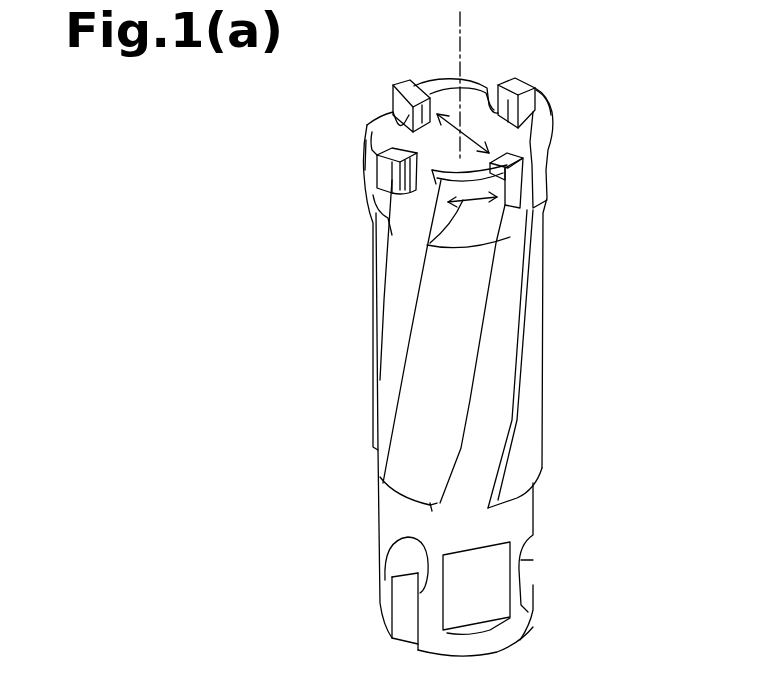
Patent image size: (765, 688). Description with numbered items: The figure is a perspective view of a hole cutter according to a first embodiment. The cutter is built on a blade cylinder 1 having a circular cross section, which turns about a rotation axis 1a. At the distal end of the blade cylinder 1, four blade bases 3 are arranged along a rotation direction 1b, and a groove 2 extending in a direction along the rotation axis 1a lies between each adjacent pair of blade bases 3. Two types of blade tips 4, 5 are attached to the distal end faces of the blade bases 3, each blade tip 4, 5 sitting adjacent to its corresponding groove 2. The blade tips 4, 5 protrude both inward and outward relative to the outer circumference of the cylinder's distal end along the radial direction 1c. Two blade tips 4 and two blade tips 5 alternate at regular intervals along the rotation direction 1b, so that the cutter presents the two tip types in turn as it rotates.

The blade cylinder 1 is at (548, 373).
The rotation axis 1a is at (462, 36).
The rotation direction 1b is at (443, 250).
The radial direction 1c is at (462, 160).
The groove 2 is at (397, 270).
The blade base 3 is at (445, 78).
The blade tip 4 is at (523, 87).
The blade tip 5 is at (397, 83).